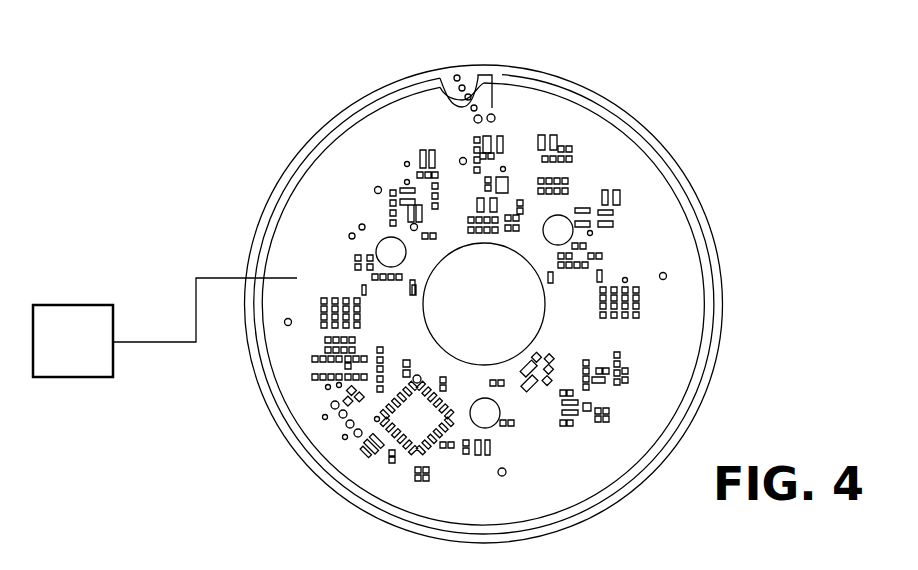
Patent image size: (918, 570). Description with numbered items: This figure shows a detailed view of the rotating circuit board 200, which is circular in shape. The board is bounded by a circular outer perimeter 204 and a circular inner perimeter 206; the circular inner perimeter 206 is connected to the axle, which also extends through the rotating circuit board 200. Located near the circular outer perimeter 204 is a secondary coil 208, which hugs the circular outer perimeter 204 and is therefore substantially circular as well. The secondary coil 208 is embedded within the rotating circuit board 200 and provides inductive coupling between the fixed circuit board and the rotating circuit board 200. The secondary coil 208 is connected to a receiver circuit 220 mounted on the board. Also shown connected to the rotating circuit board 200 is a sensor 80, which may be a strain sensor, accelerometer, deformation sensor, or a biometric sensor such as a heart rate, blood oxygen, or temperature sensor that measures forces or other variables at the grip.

The rotating circuit board 200 is at (684, 129).
The circular outer perimeter 204 is at (708, 220).
The secondary coil 208 is at (712, 276).
The circular inner perimeter 206 is at (484, 247).
The receiver circuit 220 is at (405, 423).
The sensor 80 is at (86, 320).